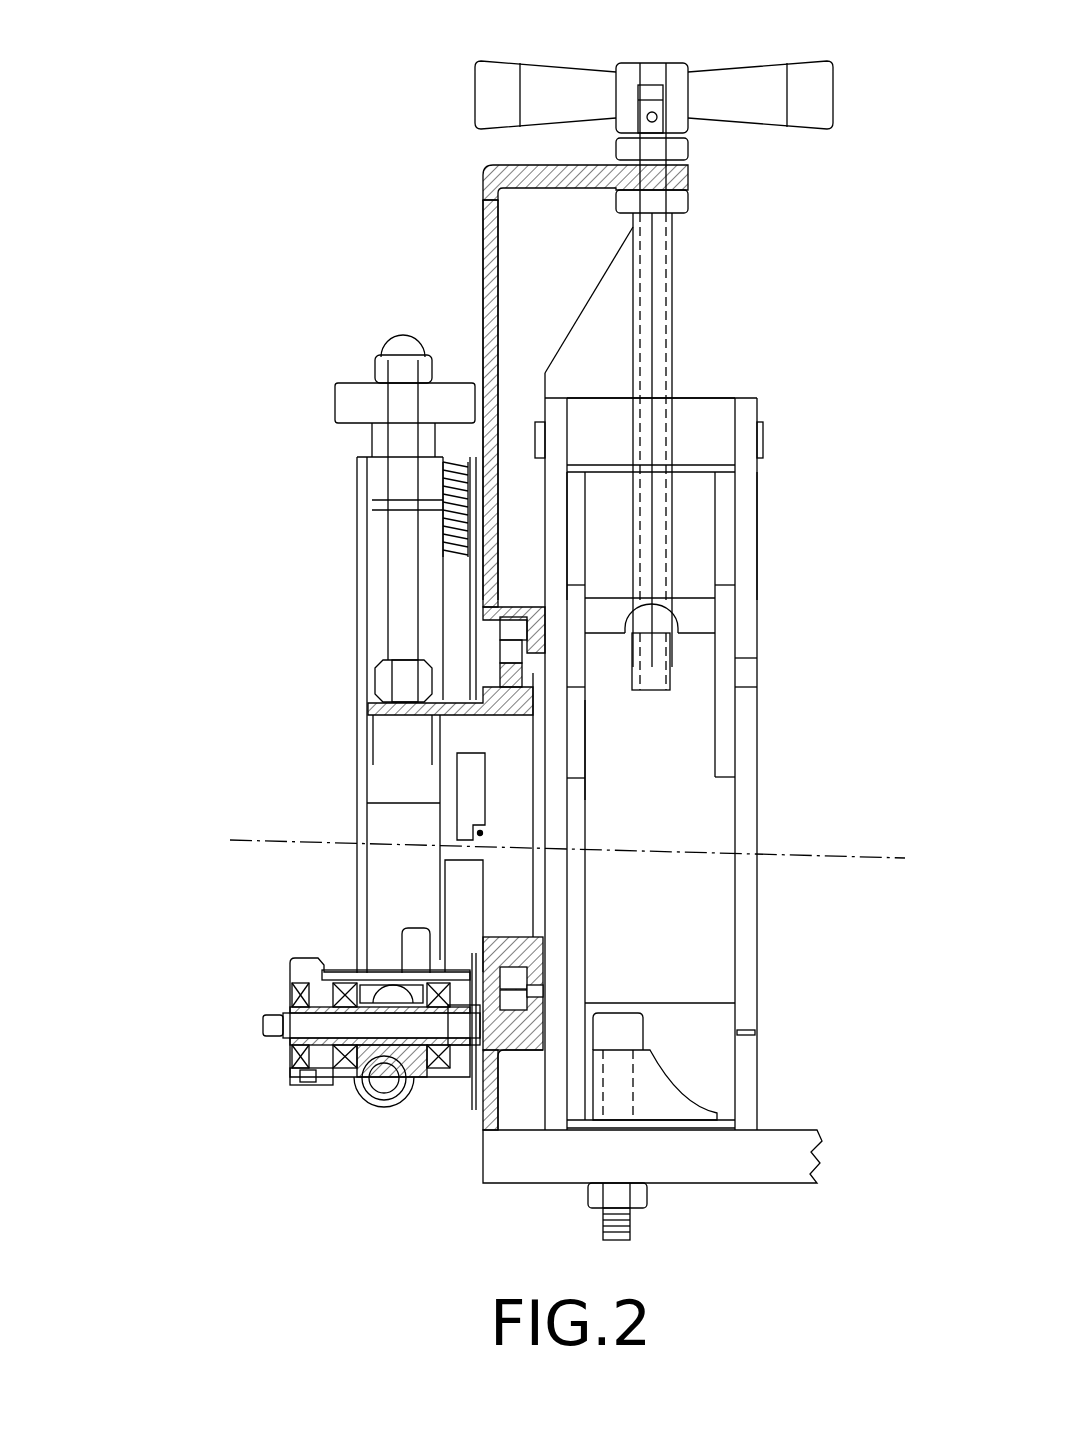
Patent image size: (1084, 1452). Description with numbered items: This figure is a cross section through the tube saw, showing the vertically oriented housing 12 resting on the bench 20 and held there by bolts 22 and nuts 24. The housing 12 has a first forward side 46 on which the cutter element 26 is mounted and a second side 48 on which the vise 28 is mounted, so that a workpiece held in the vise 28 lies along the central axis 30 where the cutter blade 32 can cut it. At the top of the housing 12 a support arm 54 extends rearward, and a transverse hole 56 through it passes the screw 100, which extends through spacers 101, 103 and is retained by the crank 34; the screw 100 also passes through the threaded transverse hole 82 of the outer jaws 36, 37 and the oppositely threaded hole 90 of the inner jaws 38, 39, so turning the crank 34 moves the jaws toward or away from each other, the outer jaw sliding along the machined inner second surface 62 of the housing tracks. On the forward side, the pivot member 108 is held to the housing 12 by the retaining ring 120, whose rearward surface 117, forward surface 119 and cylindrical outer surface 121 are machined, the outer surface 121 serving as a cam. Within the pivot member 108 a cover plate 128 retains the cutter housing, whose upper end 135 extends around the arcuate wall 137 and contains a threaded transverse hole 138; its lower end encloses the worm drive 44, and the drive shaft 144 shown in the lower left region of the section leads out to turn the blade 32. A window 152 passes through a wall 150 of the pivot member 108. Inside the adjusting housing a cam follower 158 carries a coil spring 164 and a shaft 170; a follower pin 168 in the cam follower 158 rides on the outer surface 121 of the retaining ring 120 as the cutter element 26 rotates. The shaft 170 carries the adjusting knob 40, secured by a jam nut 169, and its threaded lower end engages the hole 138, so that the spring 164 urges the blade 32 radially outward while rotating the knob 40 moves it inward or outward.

The housing 12 is at (483, 205).
The bench 20 is at (482, 1176).
The bolts 22 is at (645, 1033).
The nuts 24 is at (647, 1195).
The cutter element 26 is at (322, 1093).
The vise 28 is at (759, 406).
The central axis 30 is at (586, 858).
The cutter blade 32 is at (480, 1105).
The crank 34 is at (837, 80).
The outer jaw 36 is at (568, 525).
The outer jaw 37 is at (758, 543).
The inner jaw 38 is at (587, 740).
The inner jaw 39 is at (735, 660).
The adjusting knob 40 is at (335, 400).
The worm drive 44 is at (293, 1065).
The first forward side 46 is at (483, 270).
The second side 48 is at (500, 285).
The support arm 54 is at (515, 167).
The transverse hole 56 is at (667, 183).
The inner second surface 62 is at (545, 640).
The threaded transverse hole 82 is at (645, 385).
The threaded hole 90 is at (648, 562).
The screw 100 is at (672, 242).
The spacer 101 is at (690, 153).
The spacer 103 is at (690, 202).
The pivot member 108 is at (487, 683).
The rearward surface 117 is at (540, 972).
The forward surface 119 is at (290, 975).
The retaining ring 120 is at (410, 718).
The cylindrical outer surface 121 is at (393, 1112).
The cover plate 128 is at (357, 910).
The upper end 135 is at (373, 683).
The arcuate wall 137 is at (440, 705).
The threaded transverse hole 138 is at (375, 673).
The shaft 144 is at (320, 1028).
The wall 150 is at (458, 856).
The window 152 is at (473, 783).
The cam follower 158 is at (457, 592).
The coil spring 164 is at (447, 527).
The follower pin 168 is at (500, 637).
The jam nut 169 is at (383, 337).
The shaft 170 is at (385, 520).